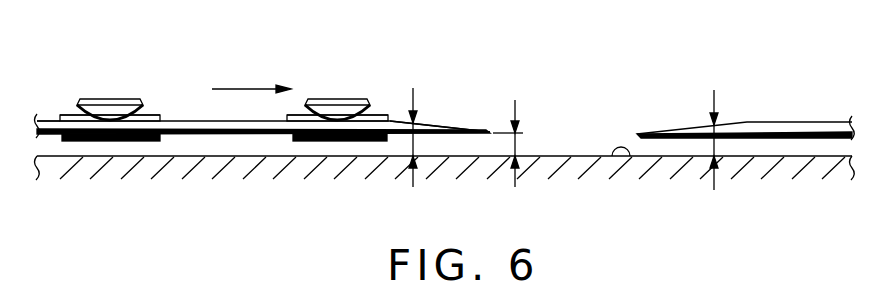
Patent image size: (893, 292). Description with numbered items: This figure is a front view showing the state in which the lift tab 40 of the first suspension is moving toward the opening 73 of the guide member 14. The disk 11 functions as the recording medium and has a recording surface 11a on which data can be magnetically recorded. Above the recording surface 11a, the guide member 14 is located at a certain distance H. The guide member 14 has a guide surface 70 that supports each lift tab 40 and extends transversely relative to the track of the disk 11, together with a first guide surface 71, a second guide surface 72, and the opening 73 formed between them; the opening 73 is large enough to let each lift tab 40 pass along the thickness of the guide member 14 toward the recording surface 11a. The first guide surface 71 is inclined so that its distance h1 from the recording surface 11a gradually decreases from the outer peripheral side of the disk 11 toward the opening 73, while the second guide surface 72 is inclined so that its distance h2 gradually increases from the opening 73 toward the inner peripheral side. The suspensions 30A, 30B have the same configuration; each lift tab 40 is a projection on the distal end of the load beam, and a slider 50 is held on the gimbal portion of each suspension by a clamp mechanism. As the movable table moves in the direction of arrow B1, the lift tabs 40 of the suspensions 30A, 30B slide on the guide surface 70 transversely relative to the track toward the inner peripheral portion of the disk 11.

The disk 11 is at (806, 172).
The recording surface 11a is at (633, 161).
The guide member 14 is at (50, 120).
The suspension 30A is at (326, 93).
The suspension 30B is at (93, 95).
The lift tab 40 is at (110, 98).
The slider 50 is at (148, 114).
The guide surface 70 is at (187, 120).
The first guide surface 71 is at (432, 126).
The second guide surface 72 is at (676, 128).
The opening 73 is at (593, 111).
The movement direction B1 is at (238, 88).
The distance of first guide surface h1 is at (416, 147).
The distance of second guide surface h2 is at (718, 140).
The distance of guide member H is at (517, 150).